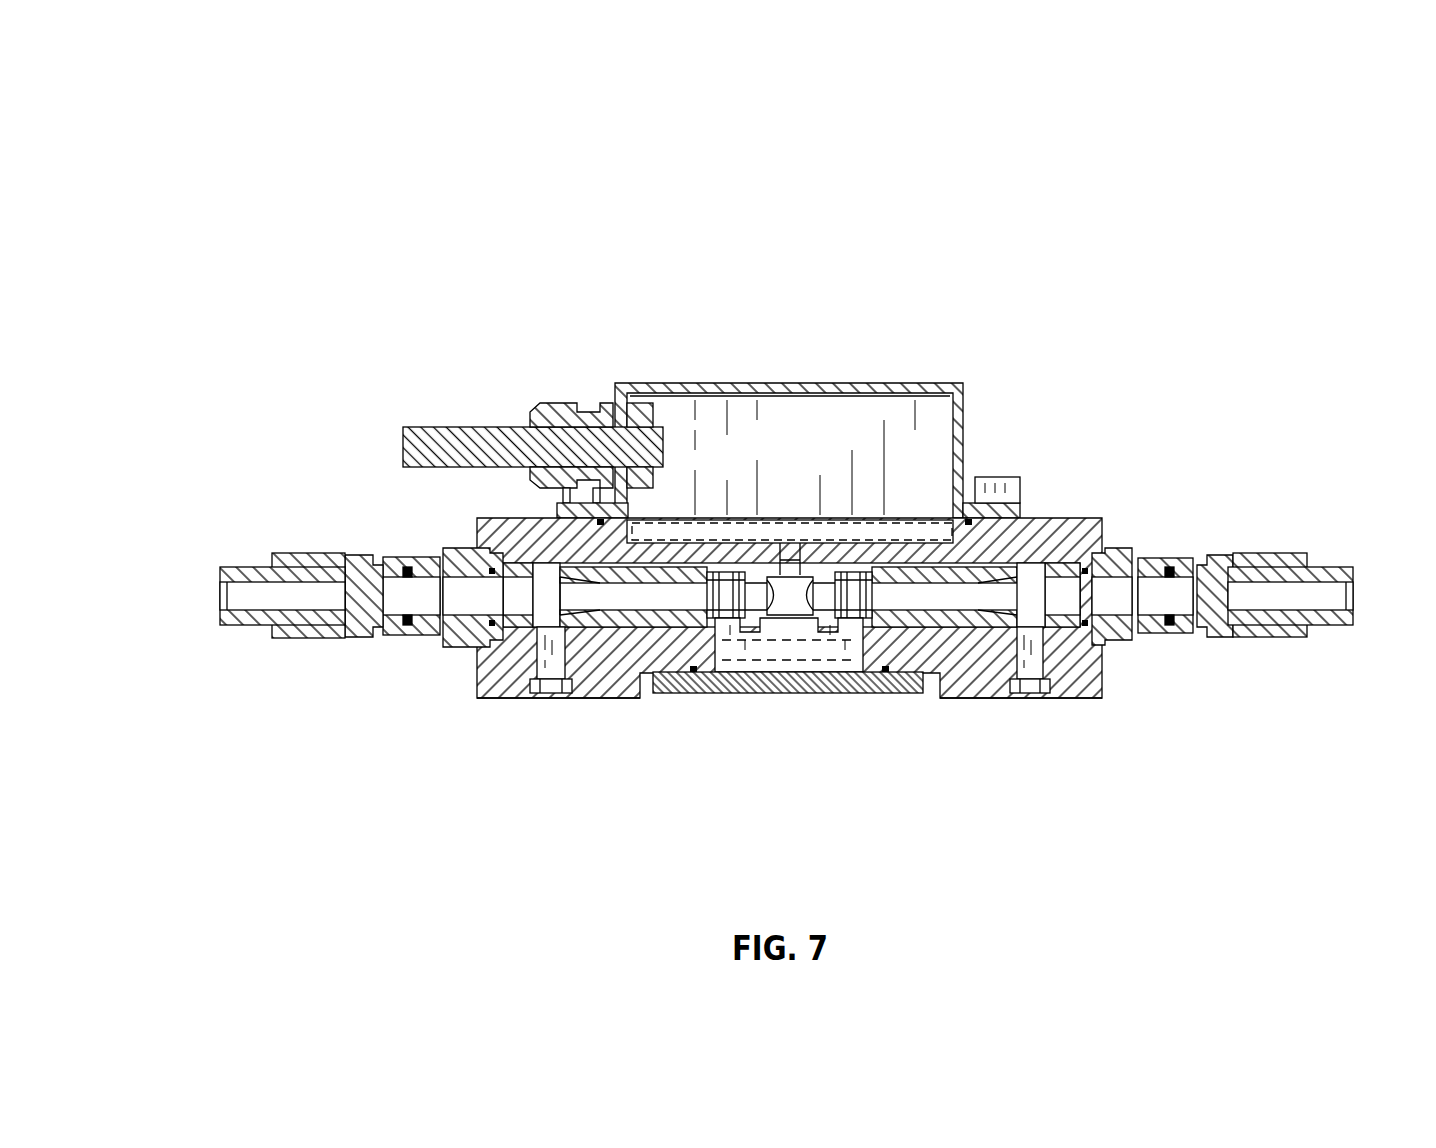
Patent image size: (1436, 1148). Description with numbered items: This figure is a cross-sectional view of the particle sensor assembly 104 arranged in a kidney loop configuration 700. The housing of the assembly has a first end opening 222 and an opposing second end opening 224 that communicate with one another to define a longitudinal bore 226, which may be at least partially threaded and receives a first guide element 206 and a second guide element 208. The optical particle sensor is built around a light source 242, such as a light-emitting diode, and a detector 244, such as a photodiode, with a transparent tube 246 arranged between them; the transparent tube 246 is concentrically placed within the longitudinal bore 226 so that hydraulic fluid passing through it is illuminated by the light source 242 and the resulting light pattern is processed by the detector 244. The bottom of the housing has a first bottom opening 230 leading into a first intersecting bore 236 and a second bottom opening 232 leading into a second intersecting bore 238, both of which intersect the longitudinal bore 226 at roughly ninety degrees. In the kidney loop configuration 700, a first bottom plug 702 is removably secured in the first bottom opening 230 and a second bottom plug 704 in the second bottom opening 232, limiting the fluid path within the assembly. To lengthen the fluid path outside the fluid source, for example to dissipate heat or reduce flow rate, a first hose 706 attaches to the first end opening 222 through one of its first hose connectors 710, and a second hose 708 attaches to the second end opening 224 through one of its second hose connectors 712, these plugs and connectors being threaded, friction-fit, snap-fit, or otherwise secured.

The kidney loop configuration 700 is at (303, 64).
The particle sensor assembly 104 is at (613, 211).
The first guide element 206 is at (625, 620).
The second guide element 208 is at (930, 620).
The first end opening 222 is at (477, 647).
The second end opening 224 is at (1100, 650).
The longitudinal bore 226 is at (1036, 583).
The first bottom opening 230 is at (585, 698).
The second bottom opening 232 is at (1060, 698).
The first intersecting bore 236 is at (545, 650).
The second intersecting bore 238 is at (1032, 648).
The light source 242 is at (786, 523).
The detector 244 is at (832, 655).
The transparent tube 246 is at (765, 615).
The first bottom plug 702 is at (537, 693).
The second bottom plug 704 is at (1022, 693).
The first hose 706 is at (226, 567).
The second hose 708 is at (1336, 570).
The first hose connector 710 is at (445, 550).
The second hose connector 712 is at (1125, 548).